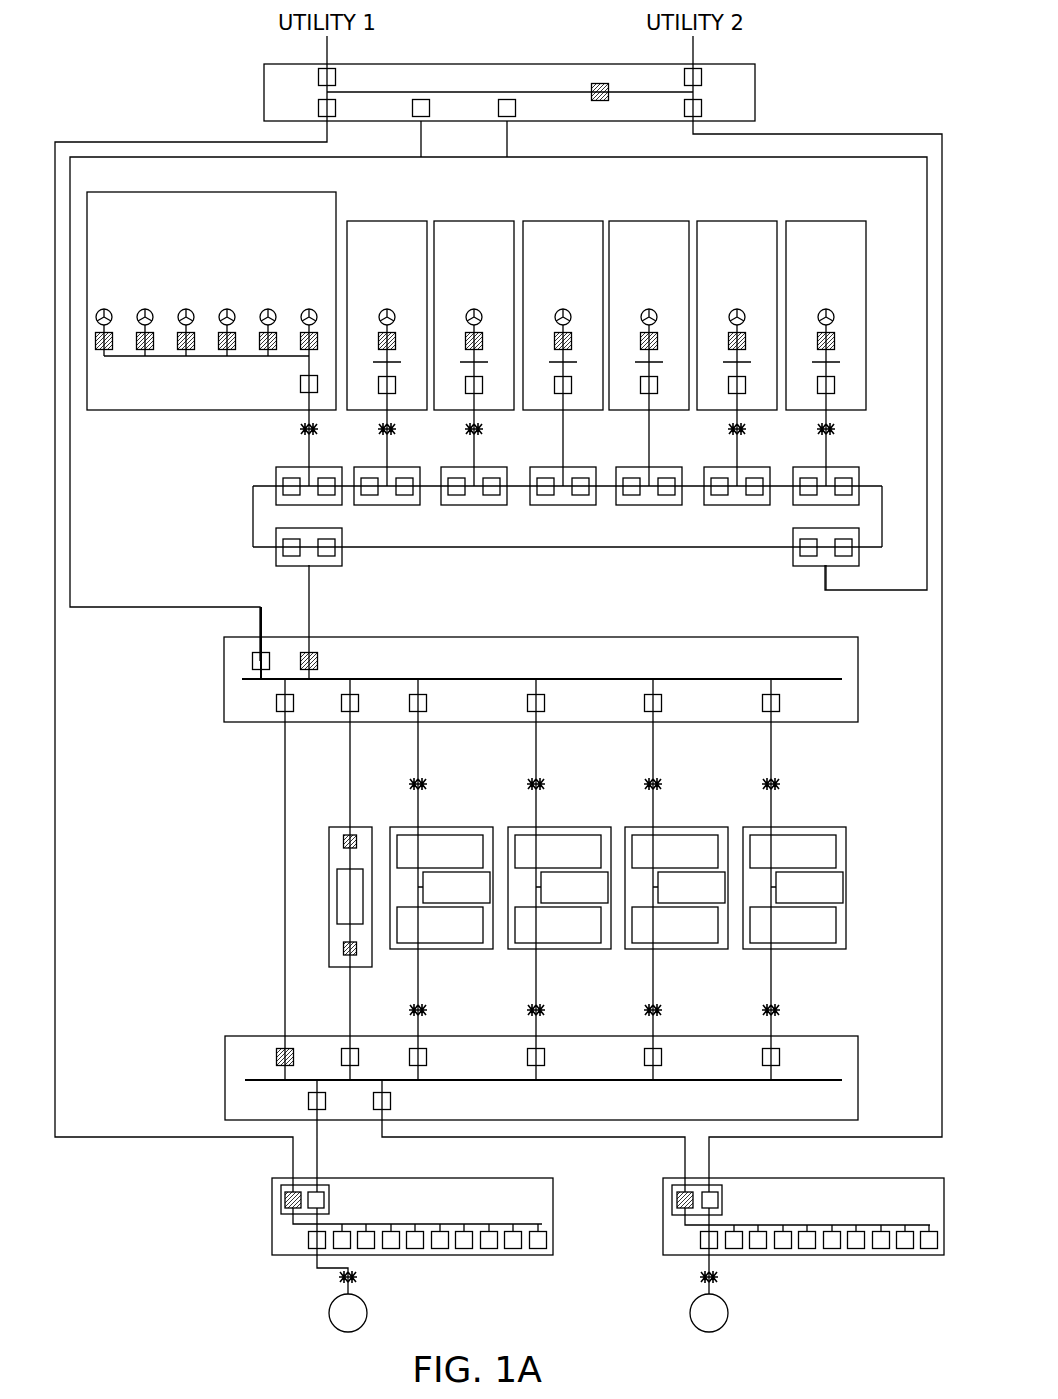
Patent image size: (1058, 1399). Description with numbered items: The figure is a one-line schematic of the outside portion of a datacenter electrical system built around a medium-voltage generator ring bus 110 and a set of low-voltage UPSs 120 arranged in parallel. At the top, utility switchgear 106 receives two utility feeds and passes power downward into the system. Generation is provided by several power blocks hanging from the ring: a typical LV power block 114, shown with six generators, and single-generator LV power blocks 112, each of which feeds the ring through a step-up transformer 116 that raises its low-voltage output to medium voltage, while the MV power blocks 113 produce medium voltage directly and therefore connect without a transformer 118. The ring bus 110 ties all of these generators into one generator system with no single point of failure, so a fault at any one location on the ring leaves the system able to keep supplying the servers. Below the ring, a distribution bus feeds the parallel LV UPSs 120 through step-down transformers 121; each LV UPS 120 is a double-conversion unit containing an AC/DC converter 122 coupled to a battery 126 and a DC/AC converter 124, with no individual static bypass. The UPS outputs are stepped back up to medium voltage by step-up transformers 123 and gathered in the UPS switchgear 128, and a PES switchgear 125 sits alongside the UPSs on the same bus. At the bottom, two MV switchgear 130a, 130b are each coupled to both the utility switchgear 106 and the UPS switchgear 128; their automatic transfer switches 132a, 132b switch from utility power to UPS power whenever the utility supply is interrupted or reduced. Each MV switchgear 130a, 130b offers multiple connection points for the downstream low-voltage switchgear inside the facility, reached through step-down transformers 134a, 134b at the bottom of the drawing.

The utility switchgear 106 is at (263, 92).
The MV generator ring bus 110 is at (855, 205).
The LV power block 112 is at (387, 221).
The MV power block 113 is at (563, 221).
The LV power block 114 is at (120, 192).
The step-up transformer 116 is at (300, 429).
The transformer 118 is at (558, 420).
The LV UPS 120 is at (479, 826).
The step-down transformer 121 is at (428, 784).
The AC/DC converter 122 is at (399, 835).
The step-up transformer 123 is at (428, 1010).
The DC/AC converter 124 is at (400, 943).
The PES switchgear 125 is at (346, 835).
The battery 126 is at (488, 903).
The UPS switchgear 128 is at (225, 1078).
The MV switchgear 130a is at (372, 1242).
The MV switchgear 130b is at (763, 1242).
The automatic transfer switch 132a is at (281, 1197).
The automatic transfer switch 132b is at (672, 1197).
The step-down transformer 134a is at (358, 1277).
The step-down transformer 134b is at (719, 1277).